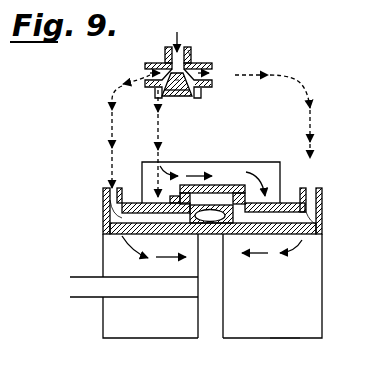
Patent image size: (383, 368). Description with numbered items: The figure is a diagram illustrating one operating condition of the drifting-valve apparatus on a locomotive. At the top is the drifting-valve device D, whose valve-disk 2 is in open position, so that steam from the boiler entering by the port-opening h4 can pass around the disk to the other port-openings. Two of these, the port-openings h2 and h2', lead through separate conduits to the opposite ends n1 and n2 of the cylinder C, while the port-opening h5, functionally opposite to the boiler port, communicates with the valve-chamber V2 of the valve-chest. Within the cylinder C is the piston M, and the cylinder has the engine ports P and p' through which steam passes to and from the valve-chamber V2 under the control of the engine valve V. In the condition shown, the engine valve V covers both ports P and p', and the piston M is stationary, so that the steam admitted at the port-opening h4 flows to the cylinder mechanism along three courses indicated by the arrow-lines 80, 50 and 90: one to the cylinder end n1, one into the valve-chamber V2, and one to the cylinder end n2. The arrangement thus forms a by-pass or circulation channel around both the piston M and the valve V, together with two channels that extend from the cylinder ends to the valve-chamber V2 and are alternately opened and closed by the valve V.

The drifting-valve device D is at (175, 65).
The port-opening h4 is at (190, 56).
The port-opening h2 is at (117, 76).
The port-opening h2' is at (241, 67).
The port-opening h5 is at (195, 88).
The valve-disk 2 is at (178, 97).
The arrow-line 80 is at (112, 136).
The arrow-line 50 is at (158, 136).
The arrow-line 90 is at (310, 123).
The valve-chamber V2 is at (302, 161).
The engine valve V is at (218, 184).
The port P is at (122, 220).
The port p' is at (294, 219).
The piston M is at (223, 306).
The cylinder end n1 is at (110, 319).
The cylinder end n2 is at (309, 300).
The cylinder C is at (283, 330).